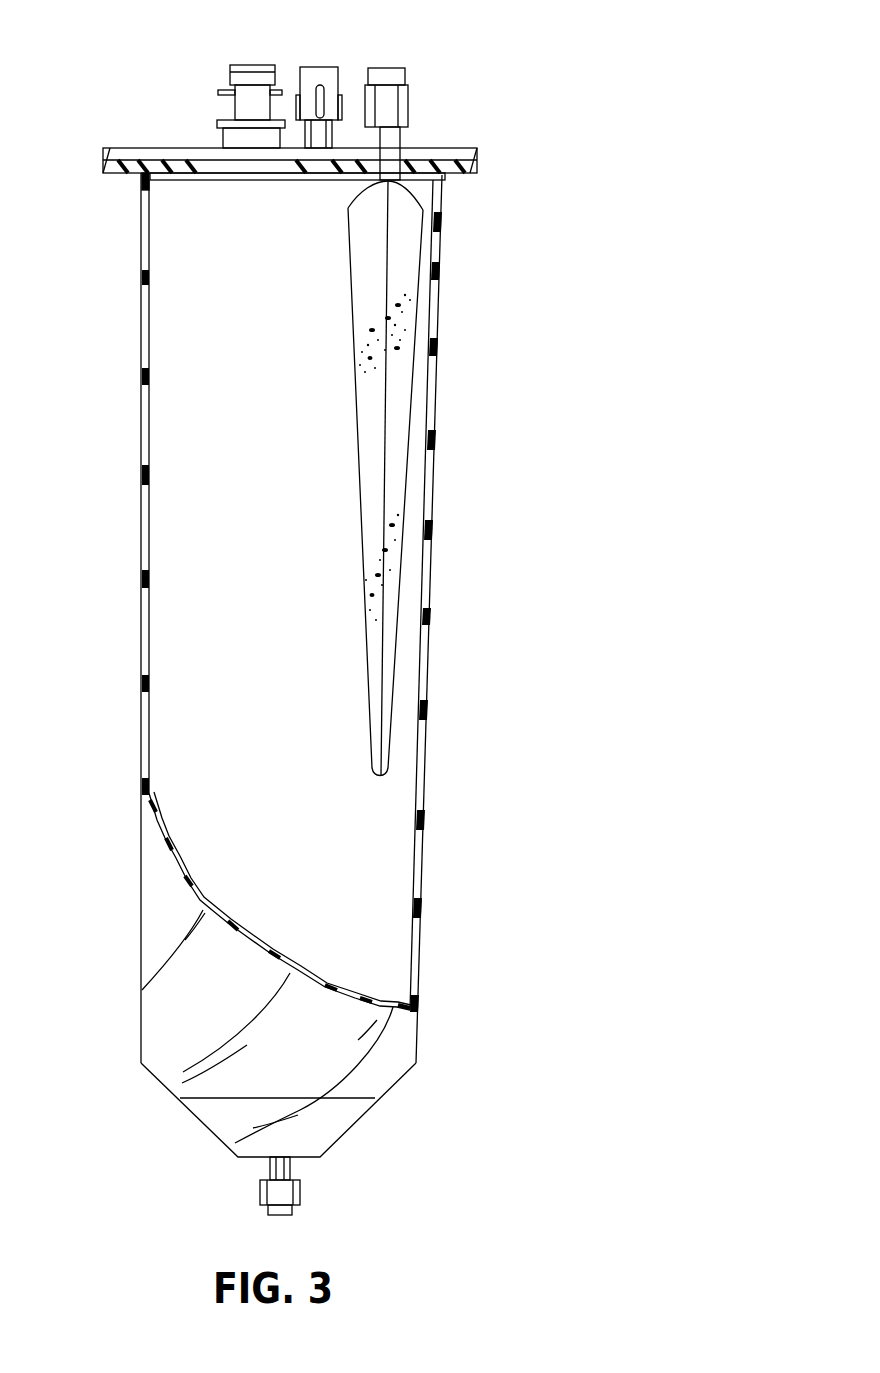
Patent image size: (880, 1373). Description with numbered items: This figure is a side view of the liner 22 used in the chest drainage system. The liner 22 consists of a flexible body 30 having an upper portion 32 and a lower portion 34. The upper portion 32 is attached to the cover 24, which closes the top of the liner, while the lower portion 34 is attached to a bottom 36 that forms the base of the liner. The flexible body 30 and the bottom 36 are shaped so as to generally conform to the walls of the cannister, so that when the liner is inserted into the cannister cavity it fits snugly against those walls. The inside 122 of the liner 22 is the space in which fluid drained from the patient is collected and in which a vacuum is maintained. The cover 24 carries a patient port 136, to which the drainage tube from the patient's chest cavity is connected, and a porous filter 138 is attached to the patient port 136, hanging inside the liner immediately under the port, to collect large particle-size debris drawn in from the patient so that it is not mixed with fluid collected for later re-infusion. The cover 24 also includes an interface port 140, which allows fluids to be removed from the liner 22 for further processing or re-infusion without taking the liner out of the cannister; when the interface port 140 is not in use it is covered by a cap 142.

The liner 22 is at (141, 462).
The cover 24 is at (129, 147).
The flexible body 30 is at (427, 700).
The upper portion 32 is at (439, 268).
The lower portion 34 is at (418, 918).
The bottom 36 is at (320, 1147).
The inside of the liner 122 is at (272, 745).
The patient port 136 is at (403, 143).
The porous filter 138 is at (400, 392).
The interface port 140 is at (336, 132).
The cap 142 is at (320, 70).